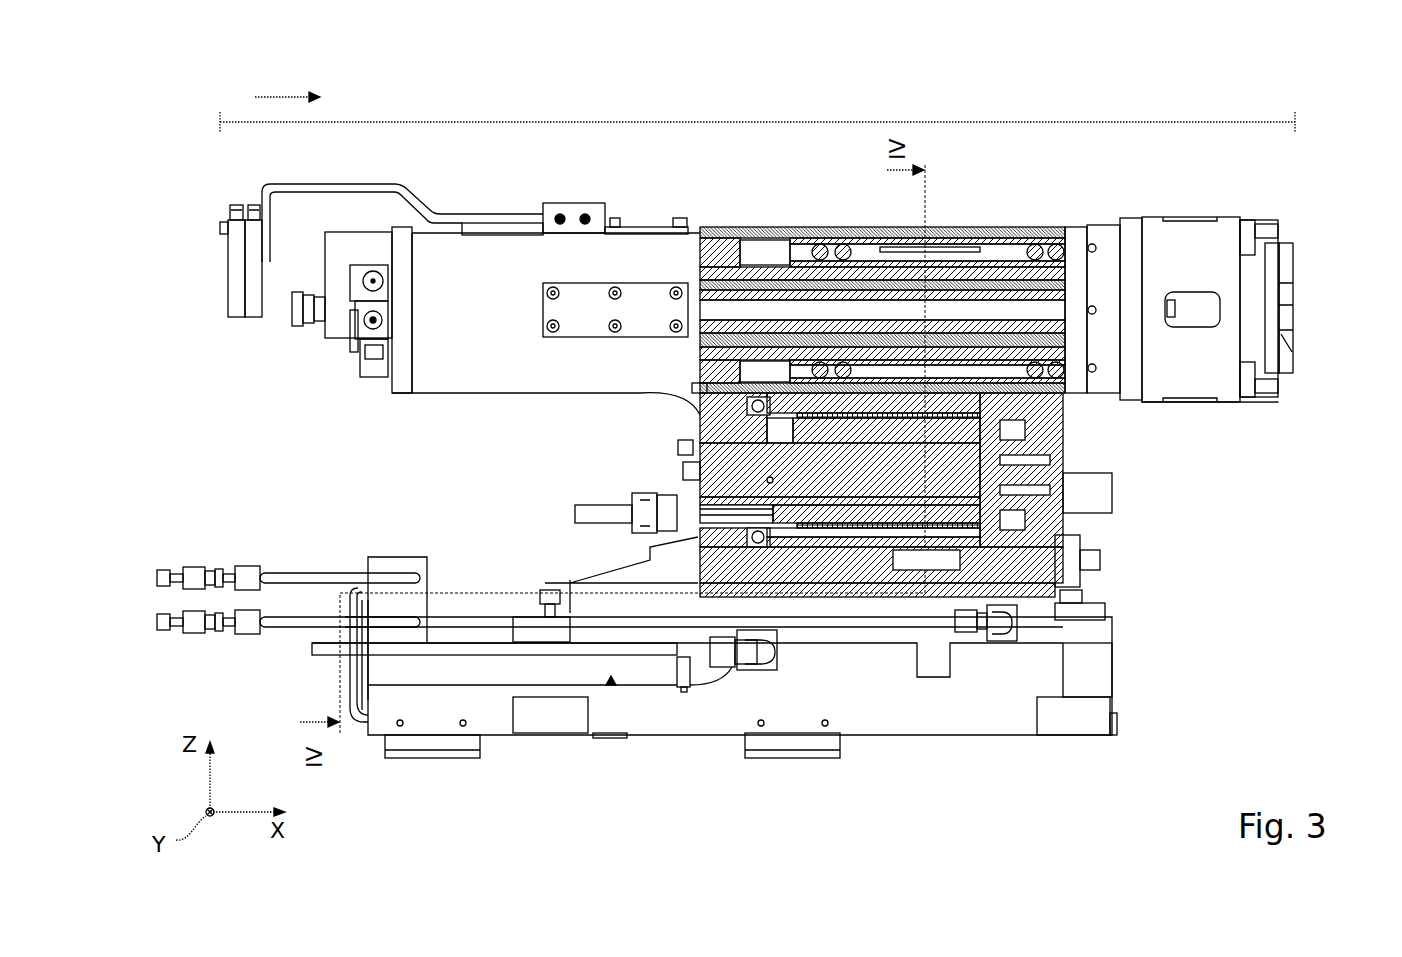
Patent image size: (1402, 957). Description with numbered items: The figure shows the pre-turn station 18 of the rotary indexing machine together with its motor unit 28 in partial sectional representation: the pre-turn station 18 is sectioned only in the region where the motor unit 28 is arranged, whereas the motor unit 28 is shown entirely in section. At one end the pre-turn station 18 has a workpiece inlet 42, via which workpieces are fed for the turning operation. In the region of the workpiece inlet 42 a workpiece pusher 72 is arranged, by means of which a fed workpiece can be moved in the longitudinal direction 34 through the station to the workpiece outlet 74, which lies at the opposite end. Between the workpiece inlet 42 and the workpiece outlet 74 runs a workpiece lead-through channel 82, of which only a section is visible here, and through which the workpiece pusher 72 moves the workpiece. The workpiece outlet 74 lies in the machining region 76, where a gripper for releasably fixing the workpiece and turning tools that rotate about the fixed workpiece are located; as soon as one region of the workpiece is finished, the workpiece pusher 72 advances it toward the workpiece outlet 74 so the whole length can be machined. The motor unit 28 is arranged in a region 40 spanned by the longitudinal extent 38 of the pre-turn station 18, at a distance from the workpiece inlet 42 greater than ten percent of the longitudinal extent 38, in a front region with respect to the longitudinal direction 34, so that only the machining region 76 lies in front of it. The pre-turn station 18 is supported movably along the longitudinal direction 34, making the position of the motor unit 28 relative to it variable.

The pre-turn station 18 is at (1330, 298).
The motor unit 28 is at (1140, 490).
The longitudinal direction 34 is at (290, 97).
The longitudinal extent 38 is at (478, 121).
The region 40 is at (376, 499).
The workpiece inlet 42 is at (286, 322).
The workpiece pusher 72 is at (237, 251).
The workpiece outlet 74 is at (1298, 307).
The machining region 76 is at (1290, 200).
The workpiece lead-through channel 82 is at (950, 308).